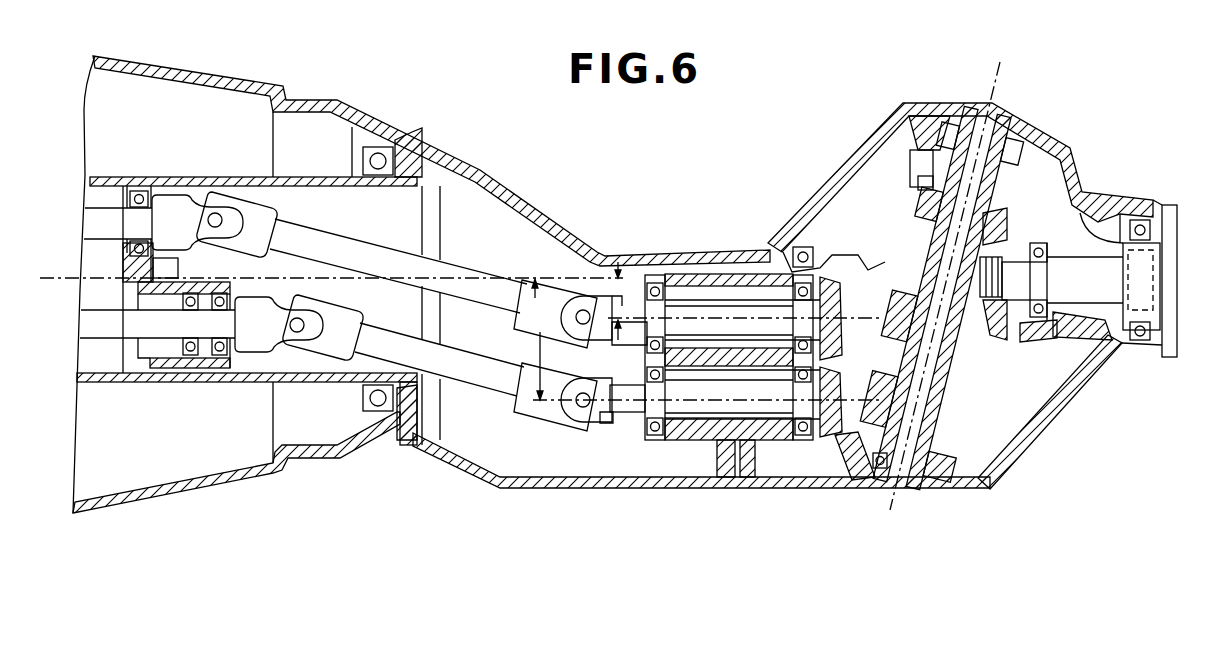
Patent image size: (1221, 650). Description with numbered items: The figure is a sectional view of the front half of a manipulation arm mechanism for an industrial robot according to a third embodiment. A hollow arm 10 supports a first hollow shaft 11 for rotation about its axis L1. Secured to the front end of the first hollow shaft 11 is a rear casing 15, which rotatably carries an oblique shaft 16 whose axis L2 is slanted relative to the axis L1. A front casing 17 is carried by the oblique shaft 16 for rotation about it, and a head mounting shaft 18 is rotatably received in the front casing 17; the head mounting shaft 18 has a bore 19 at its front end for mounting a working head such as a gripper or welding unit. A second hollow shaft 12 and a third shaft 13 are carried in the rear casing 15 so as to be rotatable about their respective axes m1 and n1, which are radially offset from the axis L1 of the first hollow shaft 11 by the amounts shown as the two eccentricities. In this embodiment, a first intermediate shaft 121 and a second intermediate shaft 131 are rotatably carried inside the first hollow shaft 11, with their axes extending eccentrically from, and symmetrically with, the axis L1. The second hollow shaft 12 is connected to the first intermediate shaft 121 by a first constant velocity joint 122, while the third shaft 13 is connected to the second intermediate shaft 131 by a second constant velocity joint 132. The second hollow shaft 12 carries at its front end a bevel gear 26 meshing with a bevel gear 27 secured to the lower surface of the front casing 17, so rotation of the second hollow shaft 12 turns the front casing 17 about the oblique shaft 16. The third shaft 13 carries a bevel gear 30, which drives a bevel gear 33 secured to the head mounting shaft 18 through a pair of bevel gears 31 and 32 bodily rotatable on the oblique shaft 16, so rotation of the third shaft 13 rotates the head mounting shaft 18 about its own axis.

The hollow arm 10 is at (178, 72).
The first hollow shaft 11 is at (312, 176).
The first intermediate shaft 121 is at (100, 218).
The second intermediate shaft 131 is at (88, 325).
The first constant velocity joint 122 is at (400, 257).
The second constant velocity joint 132 is at (458, 368).
The second hollow shaft 12 is at (687, 306).
The third shaft 13 is at (690, 403).
The axis of the second hollow shaft m1 is at (732, 318).
The axis of the third shaft n1 is at (640, 400).
The axis of the first hollow shaft L1 is at (52, 272).
The axis of the oblique shaft L2 is at (1005, 66).
The rear casing 15 is at (775, 487).
The oblique shaft 16 is at (918, 474).
The front casing 17 is at (863, 148).
The head mounting shaft 18 is at (1172, 328).
The bore 19 is at (1172, 257).
The bevel gear 26 is at (843, 330).
The bevel gear 27 is at (1030, 342).
The bevel gear 30 is at (843, 400).
The bevel gear 31 is at (955, 449).
The bevel gear 32 is at (920, 207).
The bevel gear 33 is at (1000, 330).